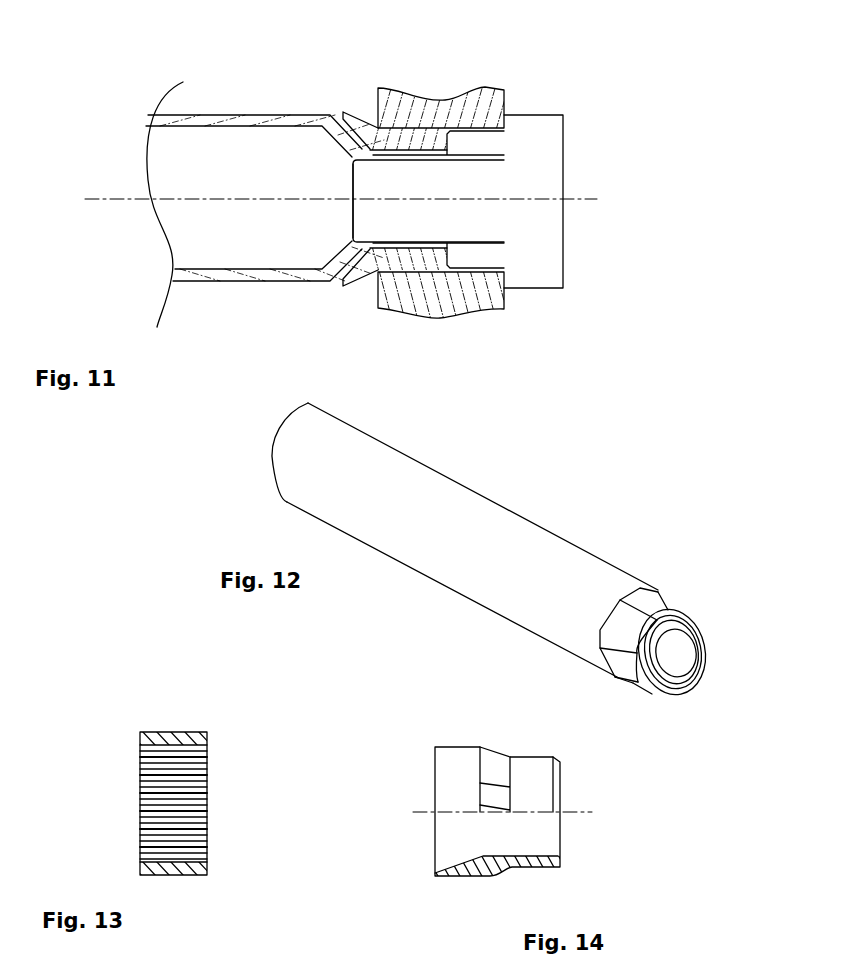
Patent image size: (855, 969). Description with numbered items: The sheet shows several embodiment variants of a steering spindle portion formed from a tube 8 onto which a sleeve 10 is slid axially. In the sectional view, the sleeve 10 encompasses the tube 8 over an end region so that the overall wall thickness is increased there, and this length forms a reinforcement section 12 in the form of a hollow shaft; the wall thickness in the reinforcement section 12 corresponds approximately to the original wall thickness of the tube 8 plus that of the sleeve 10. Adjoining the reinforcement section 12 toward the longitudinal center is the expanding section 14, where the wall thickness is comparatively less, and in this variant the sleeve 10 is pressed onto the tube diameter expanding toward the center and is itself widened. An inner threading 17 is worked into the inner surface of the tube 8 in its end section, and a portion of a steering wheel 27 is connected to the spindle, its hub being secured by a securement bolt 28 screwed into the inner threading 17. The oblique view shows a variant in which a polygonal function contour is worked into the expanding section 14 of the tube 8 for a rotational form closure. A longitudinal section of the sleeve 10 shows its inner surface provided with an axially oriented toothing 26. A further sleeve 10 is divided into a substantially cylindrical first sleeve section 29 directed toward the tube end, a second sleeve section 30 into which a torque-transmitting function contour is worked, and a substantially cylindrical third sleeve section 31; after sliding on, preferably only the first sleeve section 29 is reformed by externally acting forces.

In FIG. 11, the tube 8 is at (265, 206).
In FIG. 12, the tube 8 is at (473, 527).
In FIG. 11, the sleeve 10 is at (447, 264).
In FIG. 12, the sleeve 10 is at (672, 695).
In FIG. 13, the sleeve 10 is at (190, 738).
In FIG. 14, the sleeve 10 is at (547, 833).
In FIG. 11, the reinforcement section 12 is at (445, 77).
In FIG. 11, the expanding section 14 is at (327, 77).
In FIG. 12, the expanding section 14 is at (642, 648).
In FIG. 11, the inner threading 17 is at (395, 241).
In FIG. 13, the toothing 26 is at (163, 783).
In FIG. 11, the steering wheel 27 is at (432, 295).
In FIG. 11, the securement bolt 28 is at (517, 132).
In FIG. 14, the first sleeve section 29 is at (525, 760).
In FIG. 14, the second sleeve section 30 is at (493, 762).
In FIG. 14, the third sleeve section 31 is at (455, 763).